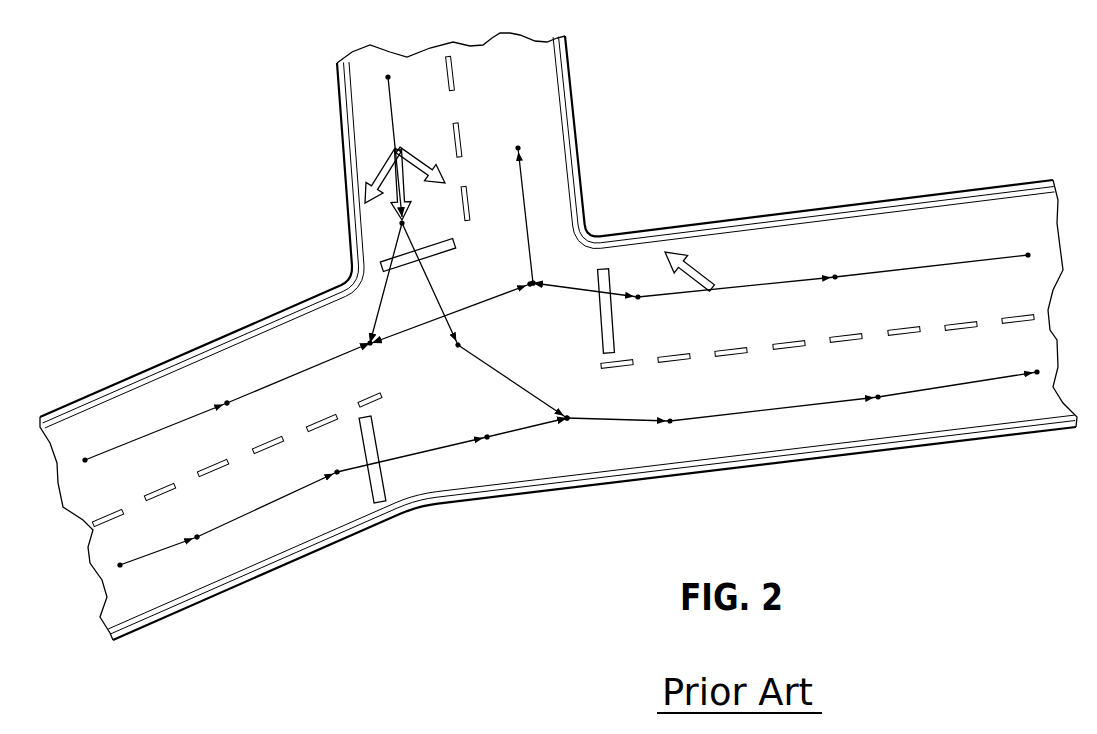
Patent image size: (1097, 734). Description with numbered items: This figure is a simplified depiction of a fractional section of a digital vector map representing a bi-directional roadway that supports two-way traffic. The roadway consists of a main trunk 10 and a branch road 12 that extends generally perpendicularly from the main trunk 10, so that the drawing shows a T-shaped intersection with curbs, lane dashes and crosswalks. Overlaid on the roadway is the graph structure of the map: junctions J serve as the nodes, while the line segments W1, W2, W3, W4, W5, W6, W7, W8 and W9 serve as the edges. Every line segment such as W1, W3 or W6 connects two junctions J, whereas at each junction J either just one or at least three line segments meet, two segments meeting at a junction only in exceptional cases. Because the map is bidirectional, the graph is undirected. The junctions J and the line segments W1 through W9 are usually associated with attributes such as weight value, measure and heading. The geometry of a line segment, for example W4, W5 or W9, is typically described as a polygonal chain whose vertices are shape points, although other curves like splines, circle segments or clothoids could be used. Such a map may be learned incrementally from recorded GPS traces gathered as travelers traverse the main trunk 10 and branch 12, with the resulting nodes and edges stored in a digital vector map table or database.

The main trunk 10 is at (990, 182).
The branch road 12 is at (580, 82).
The line segment W1 is at (392, 124).
The line segment W2 is at (356, 278).
The line segment W3 is at (163, 427).
The line segment W4 is at (499, 370).
The line segment W5 is at (827, 403).
The line segment W6 is at (907, 267).
The line segment W7 is at (527, 233).
The line segment W8 is at (490, 297).
The line segment W9 is at (406, 455).
The junction J is at (398, 218).